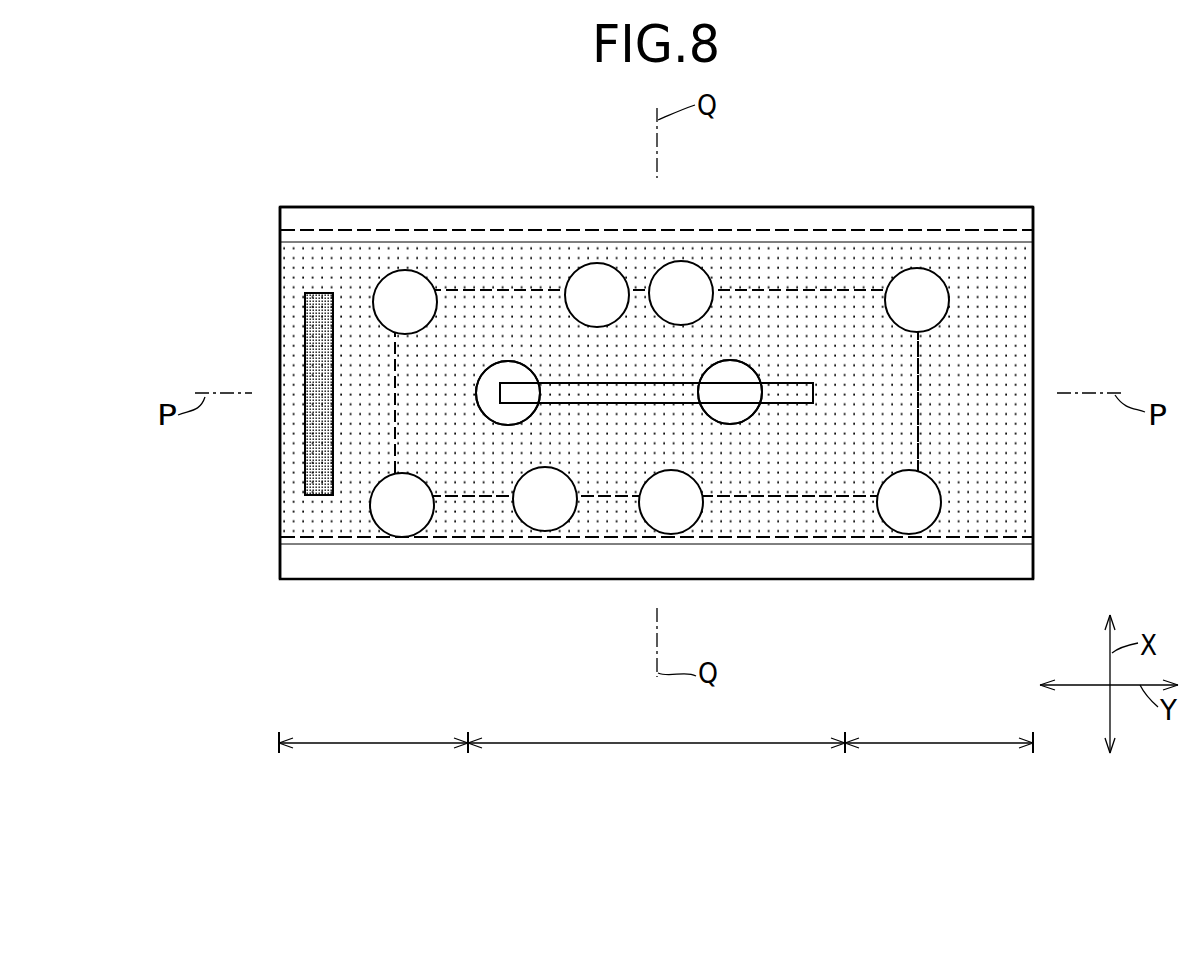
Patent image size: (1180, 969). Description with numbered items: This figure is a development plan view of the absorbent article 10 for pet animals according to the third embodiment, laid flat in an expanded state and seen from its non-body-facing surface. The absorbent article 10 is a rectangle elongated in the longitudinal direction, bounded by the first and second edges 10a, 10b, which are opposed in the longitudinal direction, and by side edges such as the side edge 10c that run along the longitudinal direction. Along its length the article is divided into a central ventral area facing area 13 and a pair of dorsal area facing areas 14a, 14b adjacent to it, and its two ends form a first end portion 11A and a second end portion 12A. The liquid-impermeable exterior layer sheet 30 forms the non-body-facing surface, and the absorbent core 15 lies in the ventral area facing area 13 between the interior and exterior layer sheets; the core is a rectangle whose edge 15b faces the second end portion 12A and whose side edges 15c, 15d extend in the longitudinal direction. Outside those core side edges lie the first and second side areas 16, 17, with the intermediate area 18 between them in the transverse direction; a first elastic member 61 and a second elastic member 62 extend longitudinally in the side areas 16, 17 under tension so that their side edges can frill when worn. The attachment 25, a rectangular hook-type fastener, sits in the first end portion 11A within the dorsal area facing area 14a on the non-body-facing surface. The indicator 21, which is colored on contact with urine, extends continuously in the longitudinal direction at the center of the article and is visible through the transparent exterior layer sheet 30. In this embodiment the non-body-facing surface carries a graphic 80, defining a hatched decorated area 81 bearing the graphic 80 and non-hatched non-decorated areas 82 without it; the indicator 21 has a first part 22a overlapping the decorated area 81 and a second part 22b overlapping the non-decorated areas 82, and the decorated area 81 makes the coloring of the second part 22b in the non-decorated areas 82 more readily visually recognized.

The absorbent article 10 is at (1022, 168).
The first edge 10a is at (278, 457).
The second edge 10b is at (1035, 493).
The side edge 10c is at (580, 207).
The first end portion 11A is at (360, 303).
The second end portion 12A is at (1005, 307).
The ventral area facing area 13 is at (650, 745).
The dorsal area facing area 14a is at (367, 745).
The dorsal area facing area 14b is at (938, 745).
The absorbent core 15 is at (842, 320).
The edge of absorbent core 15b is at (920, 410).
The side edge of absorbent core 15c is at (781, 287).
The side edge of absorbent core 15d is at (718, 497).
The first side area 16 is at (506, 258).
The second side area 17 is at (455, 520).
The intermediate area 18 is at (1015, 363).
The indicator 21 is at (642, 382).
The first part 22a is at (598, 404).
The second part 22b is at (510, 382).
The attachment 25 is at (313, 493).
The exterior layer sheet 30 is at (621, 520).
The first elastic member 61 is at (727, 230).
The second elastic member 62 is at (770, 543).
The graphic 80 is at (1079, 265).
The decorated area 81 is at (998, 270).
The non-decorated areas 82 is at (405, 270).